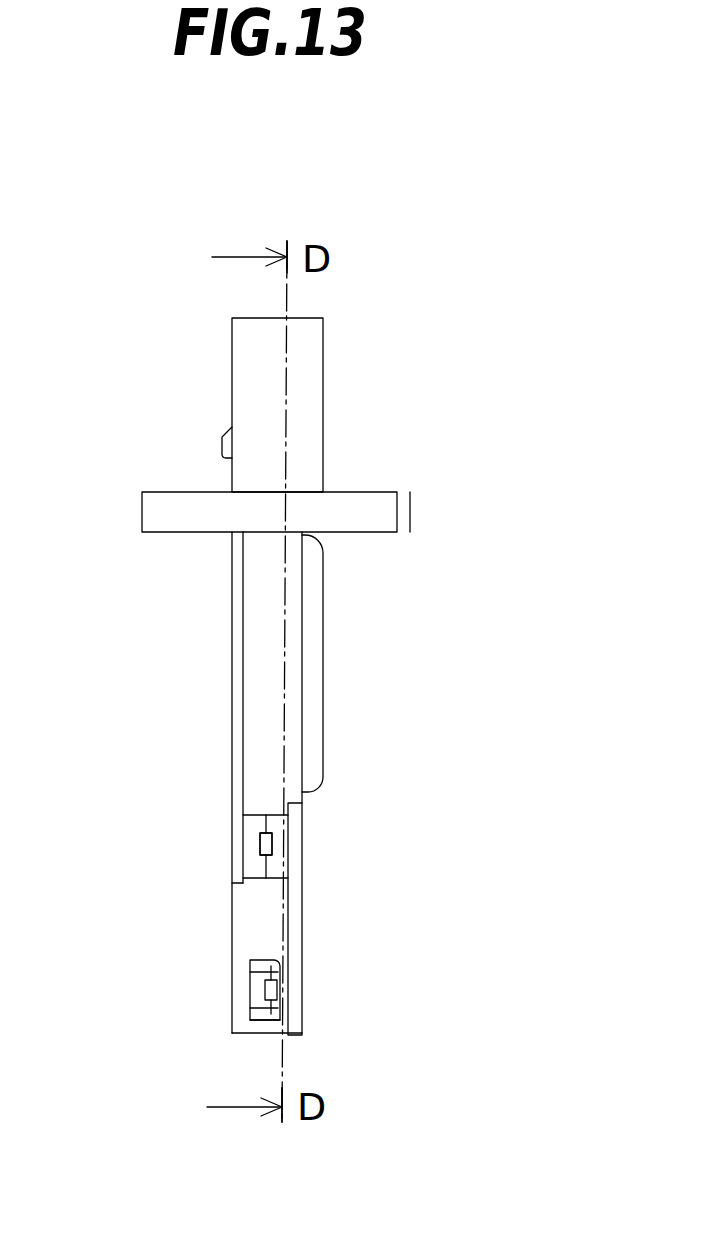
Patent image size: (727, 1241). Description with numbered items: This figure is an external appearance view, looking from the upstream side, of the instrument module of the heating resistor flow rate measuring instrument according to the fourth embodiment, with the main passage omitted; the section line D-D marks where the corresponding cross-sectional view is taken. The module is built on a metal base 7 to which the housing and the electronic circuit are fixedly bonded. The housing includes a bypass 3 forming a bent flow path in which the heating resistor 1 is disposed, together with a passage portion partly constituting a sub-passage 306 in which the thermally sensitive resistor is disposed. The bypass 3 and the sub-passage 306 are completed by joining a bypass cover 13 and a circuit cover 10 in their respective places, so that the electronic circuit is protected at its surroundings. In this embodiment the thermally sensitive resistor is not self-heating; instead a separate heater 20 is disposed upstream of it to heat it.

The heating resistor 1 is at (272, 843).
The bypass 3 is at (260, 845).
The metal base 7 is at (232, 705).
The circuit cover 10 is at (323, 663).
The bypass cover 13 is at (302, 925).
The heater 20 is at (277, 990).
The sub-passage 306 is at (263, 1033).